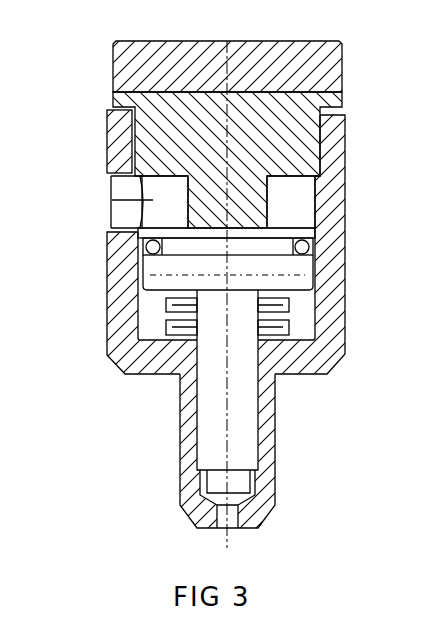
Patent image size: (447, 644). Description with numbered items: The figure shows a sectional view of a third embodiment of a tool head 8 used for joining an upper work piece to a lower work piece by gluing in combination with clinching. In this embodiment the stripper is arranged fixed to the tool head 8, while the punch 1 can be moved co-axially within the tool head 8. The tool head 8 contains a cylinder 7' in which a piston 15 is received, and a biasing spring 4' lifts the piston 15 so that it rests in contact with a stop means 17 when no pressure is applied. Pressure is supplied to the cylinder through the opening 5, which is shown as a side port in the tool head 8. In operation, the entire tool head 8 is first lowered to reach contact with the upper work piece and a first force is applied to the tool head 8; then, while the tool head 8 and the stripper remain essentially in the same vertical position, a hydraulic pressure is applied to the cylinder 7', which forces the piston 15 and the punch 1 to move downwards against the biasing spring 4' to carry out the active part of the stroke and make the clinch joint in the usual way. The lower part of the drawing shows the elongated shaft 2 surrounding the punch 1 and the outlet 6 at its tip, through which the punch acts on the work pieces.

The punch 1 is at (248, 442).
The nozzle shaft 2 is at (187, 450).
The biasing spring 4' is at (176, 318).
The opening 5 is at (118, 191).
The outlet opening 6 is at (235, 528).
The cylinder 7' is at (328, 202).
The tool head 8 is at (338, 145).
The piston 15 is at (303, 275).
The stop means 17 is at (200, 207).